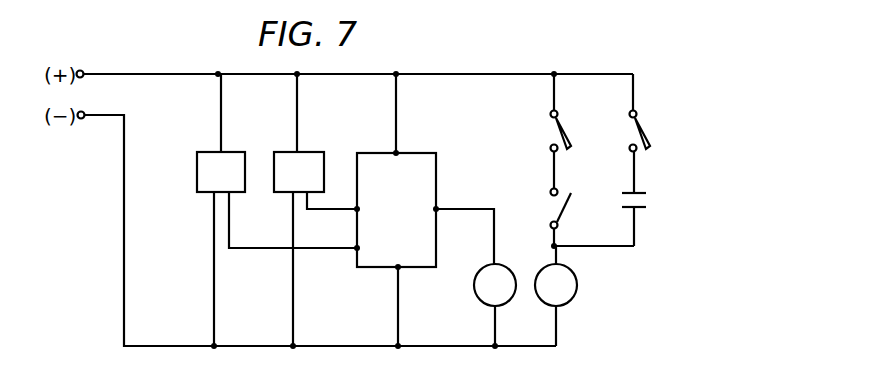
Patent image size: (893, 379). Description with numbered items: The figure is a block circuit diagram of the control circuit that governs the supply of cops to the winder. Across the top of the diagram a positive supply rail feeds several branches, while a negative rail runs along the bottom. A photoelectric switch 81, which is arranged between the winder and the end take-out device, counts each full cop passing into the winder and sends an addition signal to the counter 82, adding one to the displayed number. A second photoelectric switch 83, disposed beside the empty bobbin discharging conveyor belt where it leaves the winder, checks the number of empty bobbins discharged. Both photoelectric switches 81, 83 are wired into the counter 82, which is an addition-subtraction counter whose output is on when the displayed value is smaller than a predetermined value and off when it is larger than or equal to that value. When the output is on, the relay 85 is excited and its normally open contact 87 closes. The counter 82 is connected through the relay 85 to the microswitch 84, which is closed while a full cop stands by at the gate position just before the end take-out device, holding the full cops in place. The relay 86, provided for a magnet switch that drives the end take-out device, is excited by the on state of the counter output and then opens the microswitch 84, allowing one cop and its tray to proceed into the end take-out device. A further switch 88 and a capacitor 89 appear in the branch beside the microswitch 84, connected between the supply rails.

The photoelectric switch 81 is at (277, 210).
The counter 82 is at (425, 210).
The photoelectric switch 83 is at (315, 210).
The microswitch 84 is at (539, 131).
The relay 85 is at (495, 305).
The relay 86 is at (556, 296).
The normally open contact 87 is at (576, 218).
The switch 88 is at (624, 113).
The capacitor 89 is at (619, 199).